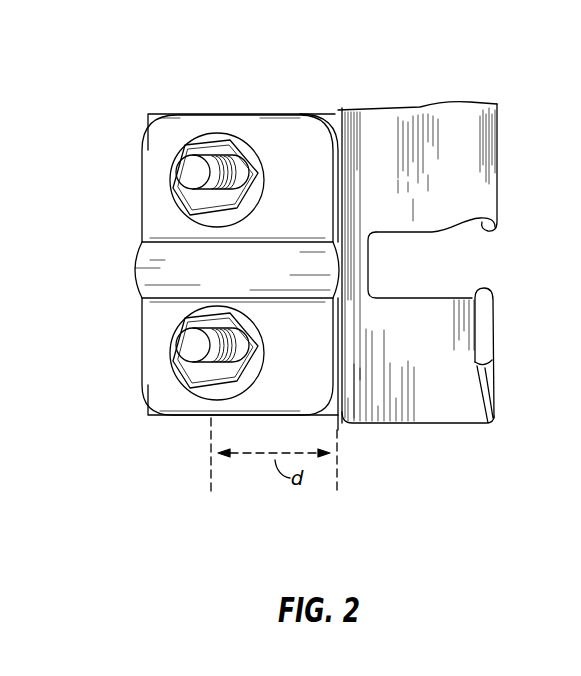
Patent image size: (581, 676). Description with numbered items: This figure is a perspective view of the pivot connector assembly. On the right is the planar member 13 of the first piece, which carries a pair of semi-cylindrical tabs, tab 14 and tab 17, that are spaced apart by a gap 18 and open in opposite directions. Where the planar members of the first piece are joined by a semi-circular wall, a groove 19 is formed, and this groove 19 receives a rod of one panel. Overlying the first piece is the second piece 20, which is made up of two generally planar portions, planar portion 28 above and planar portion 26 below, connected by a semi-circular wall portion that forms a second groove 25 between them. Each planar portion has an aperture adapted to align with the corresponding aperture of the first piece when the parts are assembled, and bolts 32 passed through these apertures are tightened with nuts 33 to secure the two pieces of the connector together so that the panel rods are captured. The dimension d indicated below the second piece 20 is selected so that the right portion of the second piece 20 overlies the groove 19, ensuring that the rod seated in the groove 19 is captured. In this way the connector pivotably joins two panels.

The planar member 13 is at (392, 106).
The tab 14 is at (497, 104).
The tab 17 is at (493, 360).
The gap 18 is at (458, 277).
The groove 19 is at (325, 115).
The second piece 20 is at (270, 120).
The second groove 25 is at (131, 278).
The planar portion 26 is at (141, 373).
The planar portion 28 is at (141, 172).
The bolt 32 is at (186, 175).
The nut 33 is at (203, 148).